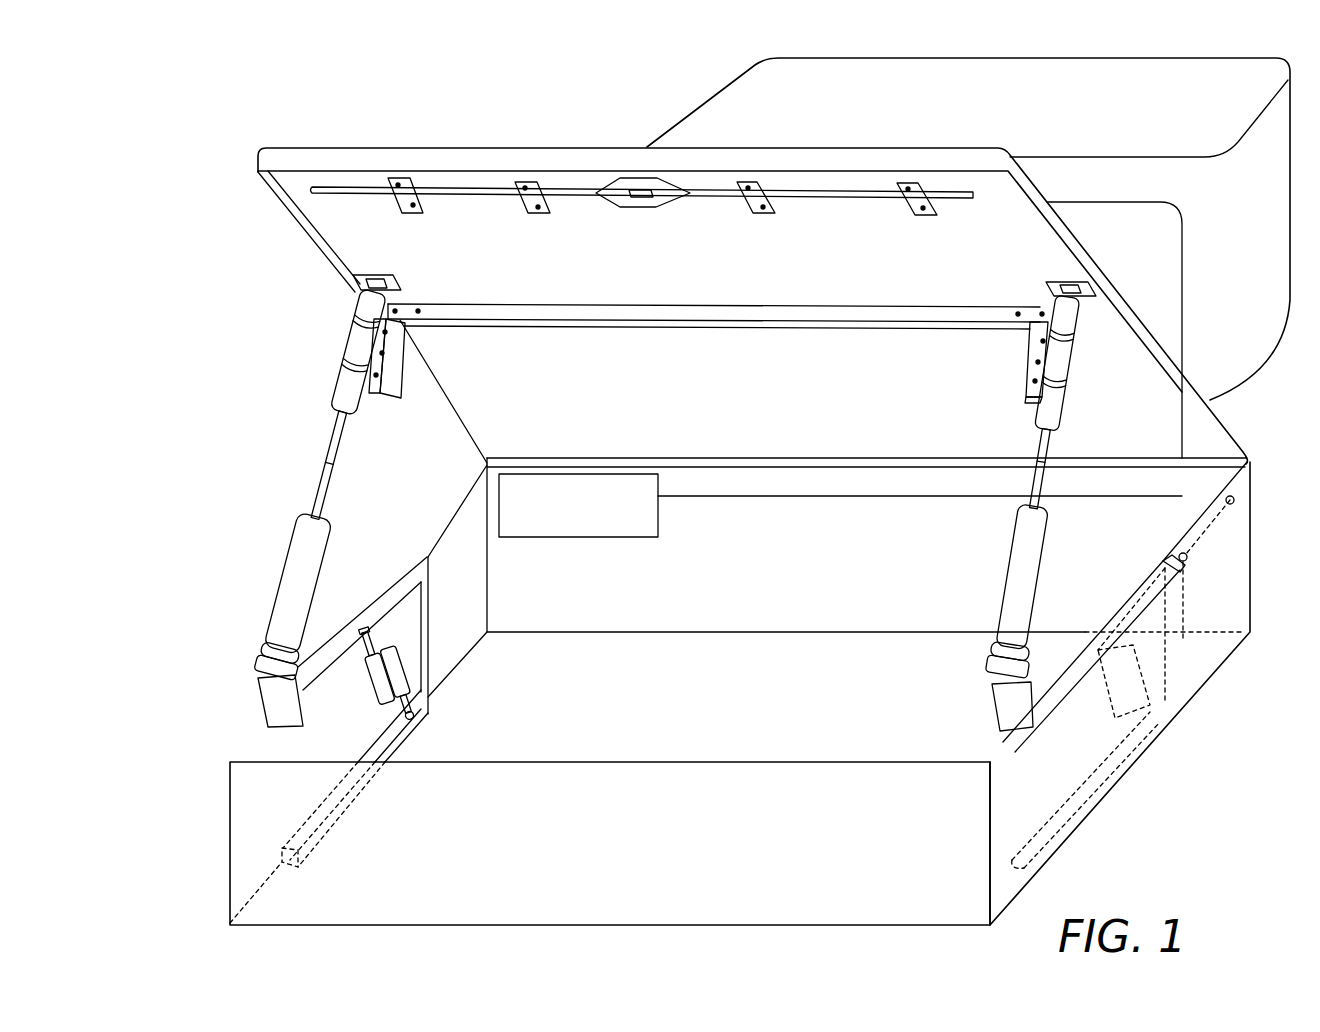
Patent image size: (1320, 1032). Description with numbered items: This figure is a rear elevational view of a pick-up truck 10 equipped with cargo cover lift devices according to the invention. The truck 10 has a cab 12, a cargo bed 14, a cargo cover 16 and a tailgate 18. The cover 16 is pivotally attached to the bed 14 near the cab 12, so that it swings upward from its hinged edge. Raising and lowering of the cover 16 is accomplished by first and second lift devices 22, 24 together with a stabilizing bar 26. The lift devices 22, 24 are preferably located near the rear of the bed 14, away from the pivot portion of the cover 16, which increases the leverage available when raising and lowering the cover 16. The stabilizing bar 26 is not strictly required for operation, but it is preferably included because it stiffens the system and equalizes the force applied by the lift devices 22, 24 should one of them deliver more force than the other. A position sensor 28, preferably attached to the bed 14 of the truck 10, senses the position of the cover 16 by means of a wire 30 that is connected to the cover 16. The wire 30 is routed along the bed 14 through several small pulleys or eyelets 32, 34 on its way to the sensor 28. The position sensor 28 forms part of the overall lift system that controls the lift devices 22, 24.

The pick-up truck 10 is at (314, 107).
The cab 12 is at (718, 110).
The cargo bed 14 is at (720, 719).
The cargo cover 16 is at (253, 157).
The tailgate 18 is at (267, 762).
The first lift device 22 is at (318, 482).
The second lift device 24 is at (1008, 576).
The stabilizing bar 26 is at (494, 303).
The position sensor 28 is at (497, 492).
The wire 30 is at (1180, 534).
The pulley or eyelet 32 is at (1236, 505).
The pulley or eyelet 34 is at (1188, 558).